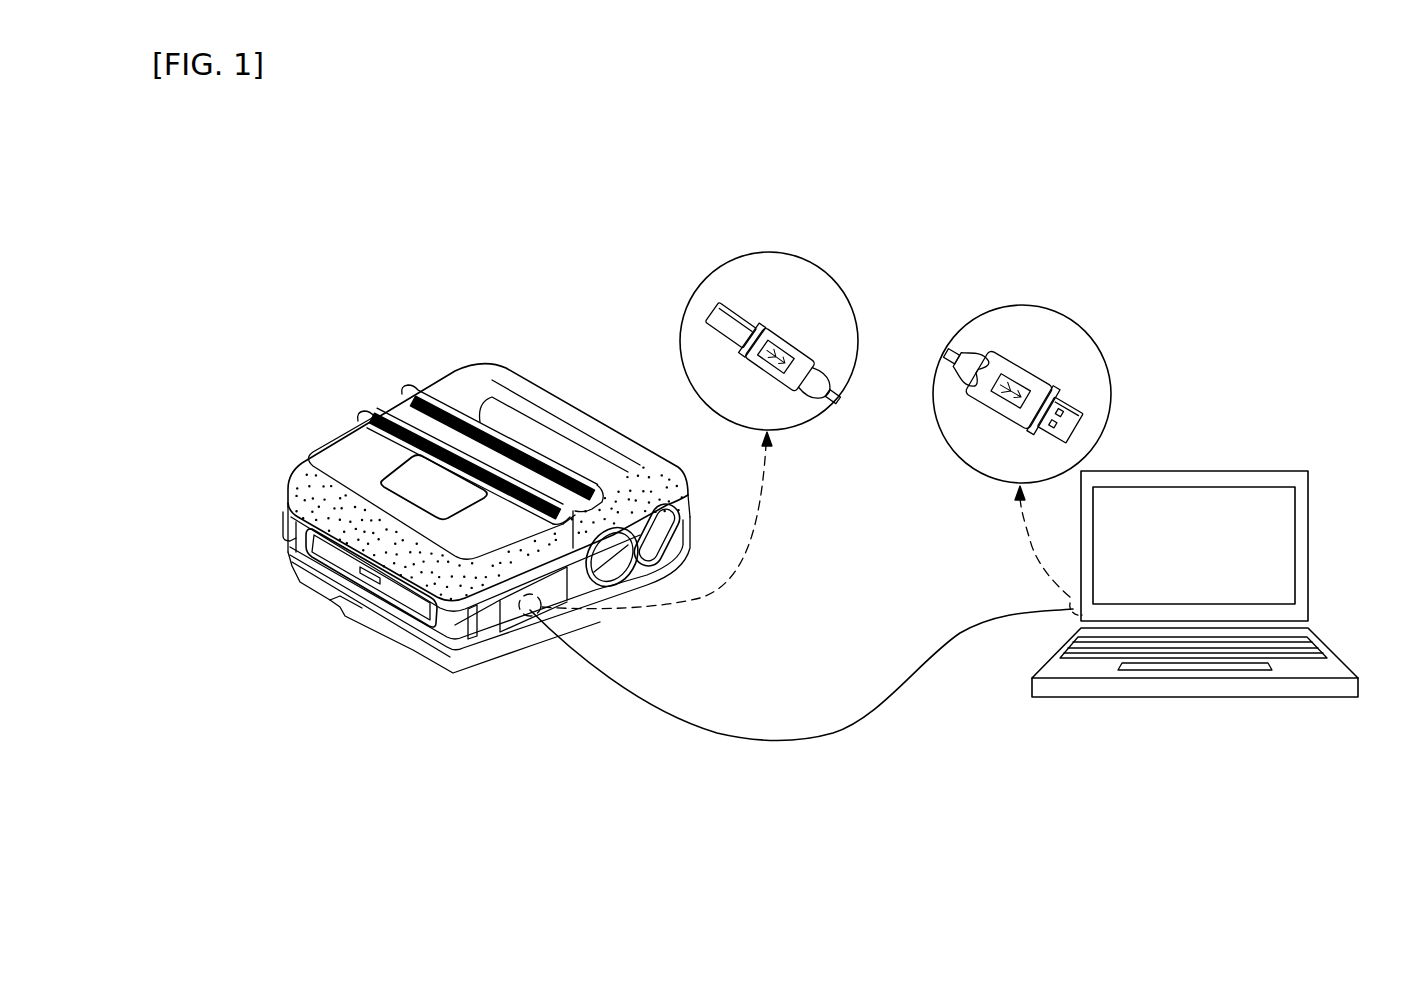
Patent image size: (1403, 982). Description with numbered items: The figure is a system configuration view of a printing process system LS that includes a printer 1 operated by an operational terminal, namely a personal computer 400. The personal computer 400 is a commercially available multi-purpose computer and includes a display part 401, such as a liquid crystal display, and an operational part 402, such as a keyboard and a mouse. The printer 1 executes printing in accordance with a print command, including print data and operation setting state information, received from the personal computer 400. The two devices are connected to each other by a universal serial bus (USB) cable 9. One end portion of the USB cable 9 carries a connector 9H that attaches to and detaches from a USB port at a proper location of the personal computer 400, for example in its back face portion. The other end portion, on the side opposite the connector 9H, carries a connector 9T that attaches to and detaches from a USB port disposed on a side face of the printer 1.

The printing process system LS is at (440, 298).
The printer 1 is at (260, 490).
The universal serial bus (USB) cable 9 is at (779, 742).
The connector 9T is at (778, 320).
The connector 9H is at (1027, 368).
The personal computer 400 is at (1250, 457).
The display part 401 is at (1280, 542).
The operational part 402 is at (1306, 647).